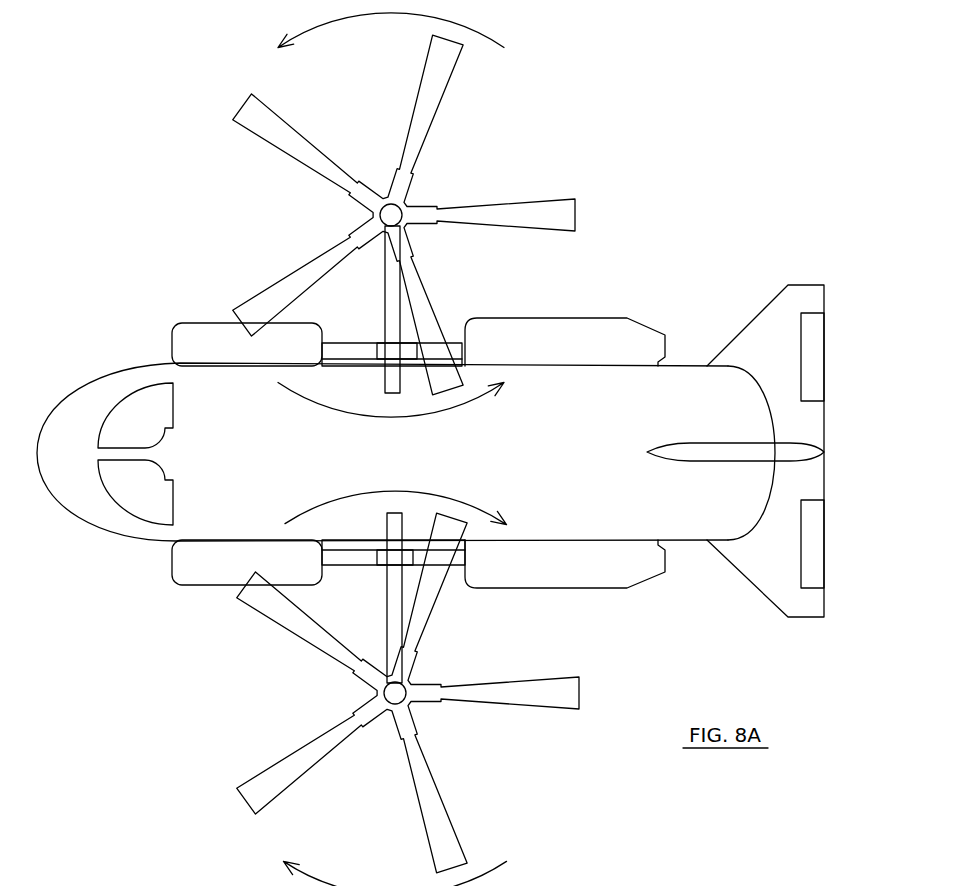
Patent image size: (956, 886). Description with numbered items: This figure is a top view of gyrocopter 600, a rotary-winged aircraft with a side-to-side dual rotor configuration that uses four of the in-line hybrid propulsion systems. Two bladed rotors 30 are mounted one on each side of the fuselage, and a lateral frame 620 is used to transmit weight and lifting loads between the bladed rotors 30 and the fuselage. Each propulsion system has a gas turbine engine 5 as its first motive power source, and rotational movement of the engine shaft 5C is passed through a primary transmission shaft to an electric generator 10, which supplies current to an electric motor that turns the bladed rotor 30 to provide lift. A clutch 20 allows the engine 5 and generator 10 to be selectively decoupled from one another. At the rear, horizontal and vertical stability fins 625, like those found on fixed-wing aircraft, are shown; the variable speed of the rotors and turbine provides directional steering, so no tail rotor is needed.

The gas turbine engine 5 is at (646, 341).
The engine shaft 5C is at (463, 338).
The electric generator 10 is at (218, 333).
The clutch 20 is at (405, 350).
The bladed rotor 30 is at (391, 213).
The gyrocopter 600 is at (674, 375).
The lateral frame 620 is at (395, 577).
The horizontal and vertical stability fins 625 is at (808, 363).